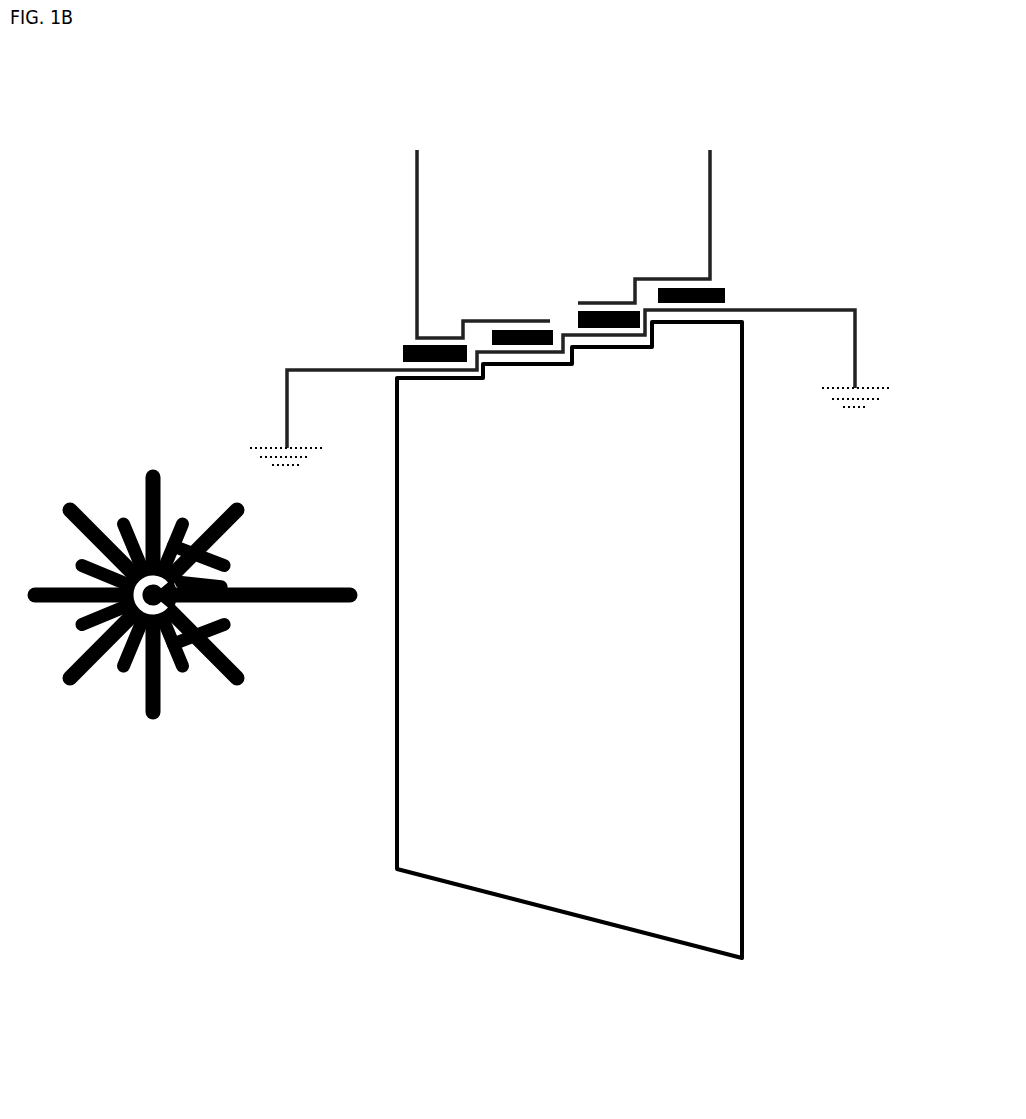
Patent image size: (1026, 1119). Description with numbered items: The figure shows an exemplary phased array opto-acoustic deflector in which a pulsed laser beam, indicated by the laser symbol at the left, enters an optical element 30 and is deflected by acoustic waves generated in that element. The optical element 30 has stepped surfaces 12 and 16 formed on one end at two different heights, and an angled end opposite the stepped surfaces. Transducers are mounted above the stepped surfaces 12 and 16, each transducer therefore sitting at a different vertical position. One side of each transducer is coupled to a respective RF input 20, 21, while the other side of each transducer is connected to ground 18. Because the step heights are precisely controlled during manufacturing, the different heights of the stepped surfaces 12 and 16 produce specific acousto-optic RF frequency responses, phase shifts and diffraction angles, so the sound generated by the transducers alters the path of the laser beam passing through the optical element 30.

The substrate 30 is at (569, 661).
The stepped surface 12 is at (458, 404).
The stepped surface 16 is at (587, 369).
The ground 18 is at (591, 377).
The RF input 20 is at (468, 215).
The RF input 21 is at (655, 198).